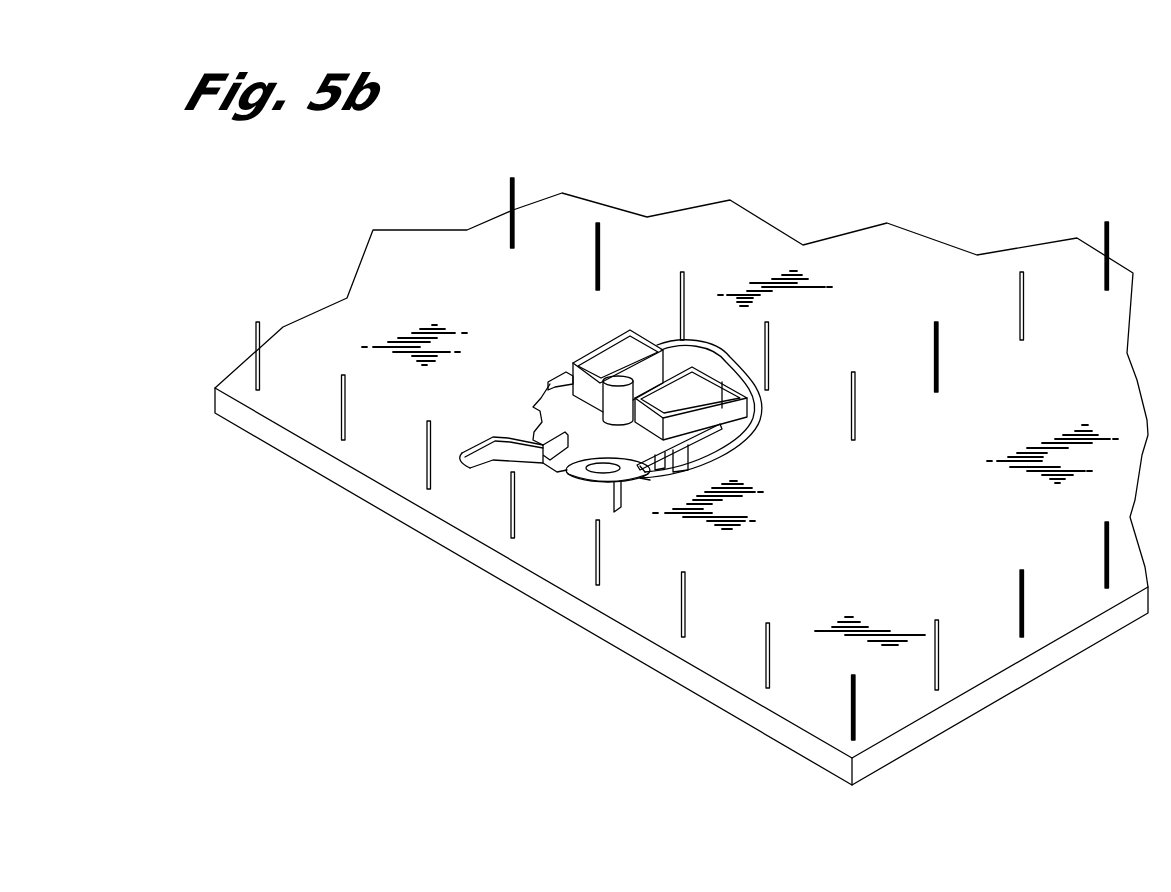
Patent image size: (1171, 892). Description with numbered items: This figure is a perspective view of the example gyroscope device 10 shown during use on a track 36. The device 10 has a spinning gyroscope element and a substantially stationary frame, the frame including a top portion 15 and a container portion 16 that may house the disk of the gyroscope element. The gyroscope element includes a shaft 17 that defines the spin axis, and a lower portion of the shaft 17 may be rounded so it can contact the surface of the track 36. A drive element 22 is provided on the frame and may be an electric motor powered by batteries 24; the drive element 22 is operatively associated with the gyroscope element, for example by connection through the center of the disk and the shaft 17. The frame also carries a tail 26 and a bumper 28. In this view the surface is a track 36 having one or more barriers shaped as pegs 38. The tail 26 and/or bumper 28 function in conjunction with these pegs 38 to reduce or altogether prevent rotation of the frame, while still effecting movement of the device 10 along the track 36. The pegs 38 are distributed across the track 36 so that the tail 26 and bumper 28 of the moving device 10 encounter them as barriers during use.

The gyroscope device 10 is at (573, 322).
The top portion 15 is at (648, 458).
The container portion 16 is at (643, 481).
The shaft 17 is at (614, 507).
The drive element 22 is at (601, 406).
The batteries 24 is at (642, 340).
The tail 26 is at (492, 437).
The bumper 28 is at (755, 413).
The track 36 is at (553, 583).
The pegs 38 is at (515, 507).